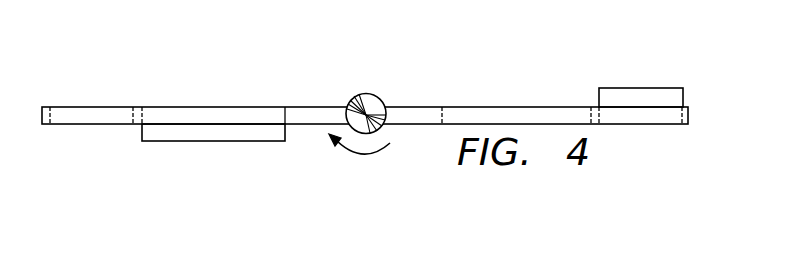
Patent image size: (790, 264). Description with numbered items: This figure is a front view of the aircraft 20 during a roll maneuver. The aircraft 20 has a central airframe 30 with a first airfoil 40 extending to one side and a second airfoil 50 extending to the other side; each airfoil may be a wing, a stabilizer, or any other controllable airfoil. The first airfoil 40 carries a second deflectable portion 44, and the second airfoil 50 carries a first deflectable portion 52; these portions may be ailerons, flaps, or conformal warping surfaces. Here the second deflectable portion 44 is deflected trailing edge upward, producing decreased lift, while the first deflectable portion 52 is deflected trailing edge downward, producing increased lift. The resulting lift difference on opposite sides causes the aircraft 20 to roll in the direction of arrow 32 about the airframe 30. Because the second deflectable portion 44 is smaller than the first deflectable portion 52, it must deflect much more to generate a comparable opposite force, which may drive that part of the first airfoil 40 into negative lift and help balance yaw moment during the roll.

The aircraft 20 is at (476, 86).
The airframe 30 is at (376, 94).
The arrow 32 is at (390, 143).
The first airfoil 40 is at (596, 105).
The second deflectable portion 44 is at (642, 93).
The second airfoil 50 is at (137, 107).
The first deflectable portion 52 is at (212, 133).